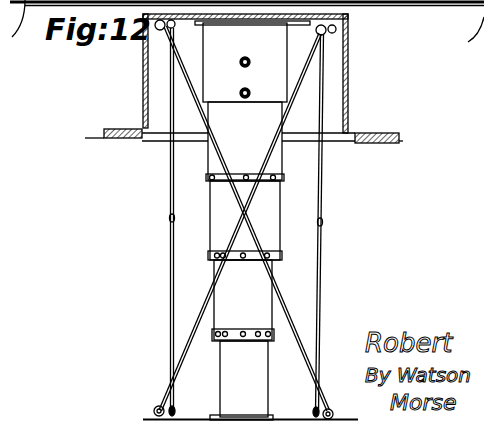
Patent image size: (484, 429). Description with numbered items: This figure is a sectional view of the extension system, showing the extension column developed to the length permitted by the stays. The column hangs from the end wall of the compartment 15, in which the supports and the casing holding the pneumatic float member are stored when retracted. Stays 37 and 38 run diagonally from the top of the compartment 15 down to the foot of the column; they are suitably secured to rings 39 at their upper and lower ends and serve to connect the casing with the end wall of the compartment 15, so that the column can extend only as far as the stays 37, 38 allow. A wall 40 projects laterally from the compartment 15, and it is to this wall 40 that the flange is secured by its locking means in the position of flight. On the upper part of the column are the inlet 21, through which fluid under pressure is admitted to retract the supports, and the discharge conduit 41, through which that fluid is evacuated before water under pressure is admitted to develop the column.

The compartment 15 is at (348, 78).
The fluid admission conduit 21 is at (250, 95).
The stay 37 is at (324, 211).
The stay 38 is at (207, 300).
The rings 39 is at (336, 30).
The wall 40 is at (386, 133).
The discharge conduit 41 is at (240, 63).